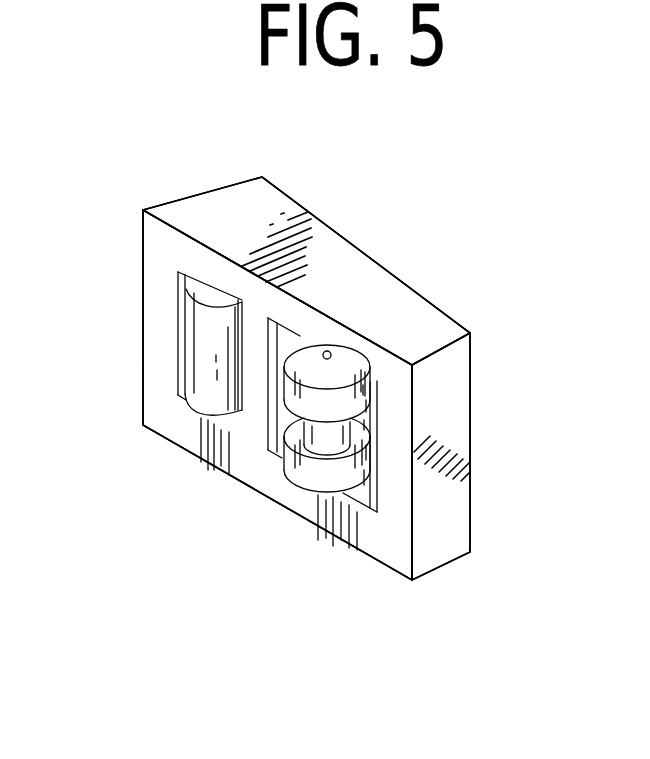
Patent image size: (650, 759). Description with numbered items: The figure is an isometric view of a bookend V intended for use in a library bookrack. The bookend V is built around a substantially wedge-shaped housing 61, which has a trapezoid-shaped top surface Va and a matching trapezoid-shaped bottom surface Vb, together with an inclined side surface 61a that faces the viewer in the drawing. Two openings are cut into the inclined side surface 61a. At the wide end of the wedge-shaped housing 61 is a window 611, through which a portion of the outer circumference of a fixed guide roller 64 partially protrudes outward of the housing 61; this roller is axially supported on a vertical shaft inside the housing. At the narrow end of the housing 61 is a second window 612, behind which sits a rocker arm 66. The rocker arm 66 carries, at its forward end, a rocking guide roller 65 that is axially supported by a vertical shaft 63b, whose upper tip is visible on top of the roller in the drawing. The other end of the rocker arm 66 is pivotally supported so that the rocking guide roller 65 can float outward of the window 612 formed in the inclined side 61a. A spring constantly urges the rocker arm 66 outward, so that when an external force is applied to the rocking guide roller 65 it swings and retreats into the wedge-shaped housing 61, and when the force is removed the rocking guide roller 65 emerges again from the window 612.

The bookend V is at (346, 206).
The top surface Va is at (223, 207).
The bottom surface Vb is at (378, 568).
The wedge-shaped housing 61 is at (460, 363).
The inclined side surface 61a is at (205, 440).
The window 611 is at (180, 313).
The window 612 is at (367, 490).
The vertical shaft 63b is at (327, 352).
The fixed guide roller 64 is at (203, 370).
The rocking guide roller 65 is at (360, 393).
The rocker arm 66 is at (358, 421).